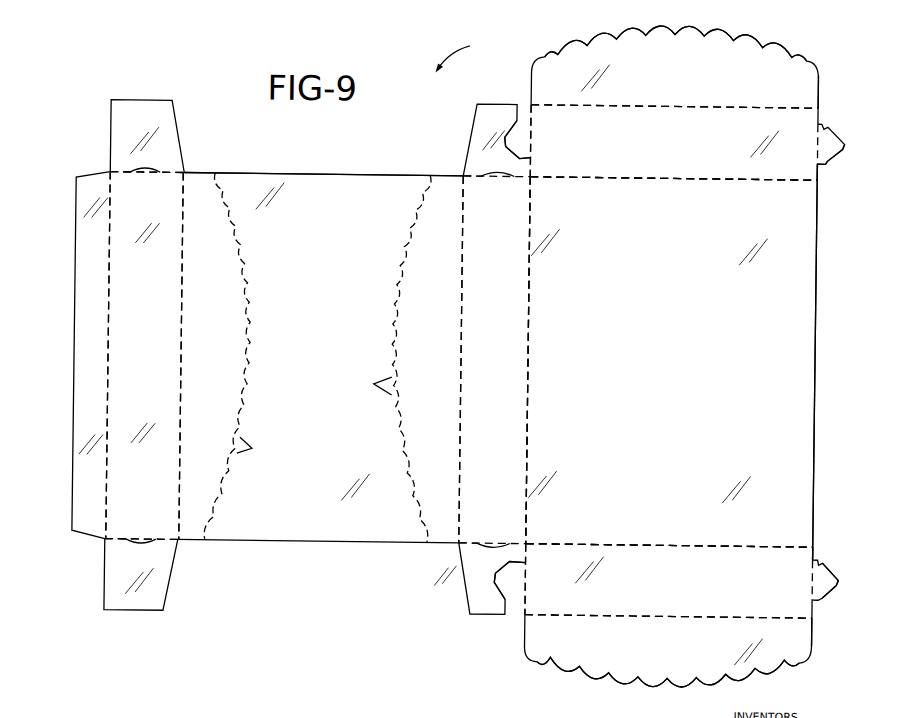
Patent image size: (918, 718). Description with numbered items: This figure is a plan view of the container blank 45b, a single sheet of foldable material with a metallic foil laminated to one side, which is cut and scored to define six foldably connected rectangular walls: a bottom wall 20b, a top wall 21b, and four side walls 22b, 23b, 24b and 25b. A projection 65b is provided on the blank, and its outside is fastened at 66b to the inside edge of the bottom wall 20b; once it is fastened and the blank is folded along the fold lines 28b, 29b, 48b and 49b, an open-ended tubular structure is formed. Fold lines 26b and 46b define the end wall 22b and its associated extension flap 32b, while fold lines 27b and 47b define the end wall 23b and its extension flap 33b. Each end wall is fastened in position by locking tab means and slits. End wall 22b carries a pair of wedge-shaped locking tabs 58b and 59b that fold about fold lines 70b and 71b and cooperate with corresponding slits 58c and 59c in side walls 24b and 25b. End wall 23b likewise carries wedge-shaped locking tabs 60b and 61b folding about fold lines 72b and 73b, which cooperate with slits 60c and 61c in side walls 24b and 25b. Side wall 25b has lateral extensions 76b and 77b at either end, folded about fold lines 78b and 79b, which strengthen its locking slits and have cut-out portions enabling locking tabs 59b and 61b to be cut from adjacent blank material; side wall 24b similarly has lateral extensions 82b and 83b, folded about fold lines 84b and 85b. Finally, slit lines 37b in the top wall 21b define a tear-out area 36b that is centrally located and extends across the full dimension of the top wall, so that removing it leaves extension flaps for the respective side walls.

The bottom wall 20b is at (667, 372).
The top wall 21b is at (336, 258).
The end wall 22b is at (686, 143).
The end wall 23b is at (685, 590).
The side wall 24b is at (158, 384).
The side wall 25b is at (513, 372).
The fold line 26b is at (617, 104).
The fold line 27b is at (604, 615).
The fold line 28b is at (195, 341).
The fold line 29b is at (462, 346).
The extension flap 32b is at (723, 39).
The extension flap 33b is at (565, 659).
The tear-out area 36b is at (330, 180).
The slit lines 37b is at (253, 451).
The container blank 45b is at (466, 51).
The fold line 46b is at (642, 180).
The fold line 47b is at (658, 541).
The fold line 48b is at (107, 341).
The fold line 49b is at (530, 341).
The locking tab 58b is at (826, 124).
The slit 58c is at (155, 174).
The locking tab 59b is at (513, 131).
The slit 59c is at (480, 173).
The locking tab 60b is at (827, 575).
The slit 60c is at (137, 543).
The locking tab 61b is at (513, 583).
The slit 61c is at (489, 543).
The projection 65b is at (82, 202).
The fastening location 66b is at (815, 293).
The fold line 70b is at (818, 144).
The fold line 71b is at (531, 147).
The fold line 72b is at (814, 569).
The fold line 73b is at (531, 577).
The lateral extension 76b is at (475, 120).
The lateral extension 77b is at (475, 603).
The fold line 78b is at (476, 177).
The fold line 79b is at (463, 557).
The lateral extension 82b is at (130, 112).
The lateral extension 83b is at (141, 602).
The fold line 84b is at (111, 175).
The fold line 85b is at (117, 544).